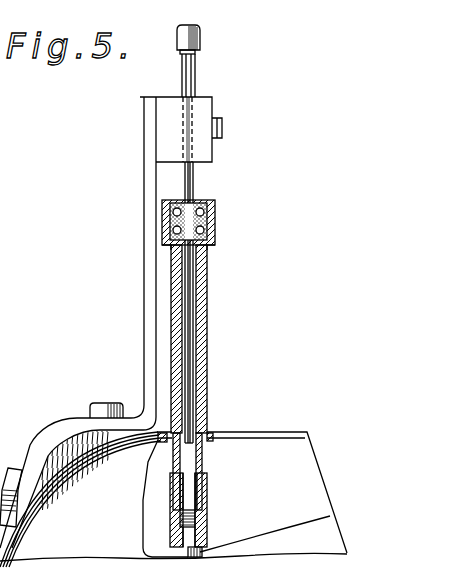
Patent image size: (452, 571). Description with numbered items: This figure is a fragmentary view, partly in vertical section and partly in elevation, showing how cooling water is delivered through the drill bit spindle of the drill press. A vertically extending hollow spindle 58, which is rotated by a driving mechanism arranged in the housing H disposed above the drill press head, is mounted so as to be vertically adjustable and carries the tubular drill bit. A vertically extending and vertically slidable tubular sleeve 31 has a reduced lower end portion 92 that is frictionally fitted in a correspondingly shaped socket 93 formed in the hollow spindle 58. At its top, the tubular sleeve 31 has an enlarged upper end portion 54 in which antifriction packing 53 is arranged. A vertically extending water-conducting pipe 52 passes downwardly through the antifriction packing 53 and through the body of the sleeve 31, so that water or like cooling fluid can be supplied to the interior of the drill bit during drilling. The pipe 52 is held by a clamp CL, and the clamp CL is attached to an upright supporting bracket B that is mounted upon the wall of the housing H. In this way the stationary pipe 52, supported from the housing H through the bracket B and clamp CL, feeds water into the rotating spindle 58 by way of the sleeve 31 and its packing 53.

The clamp CL is at (205, 100).
The upright supporting bracket B is at (148, 173).
The water-conducting pipe 52 is at (192, 185).
The antifriction packing 53 is at (214, 213).
The enlarged upper end portion 54 is at (214, 234).
The tubular sleeve 31 is at (207, 312).
The housing H is at (300, 453).
The reduced lower end portion 92 is at (206, 485).
The socket 93 is at (183, 492).
The hollow spindle 58 is at (201, 531).